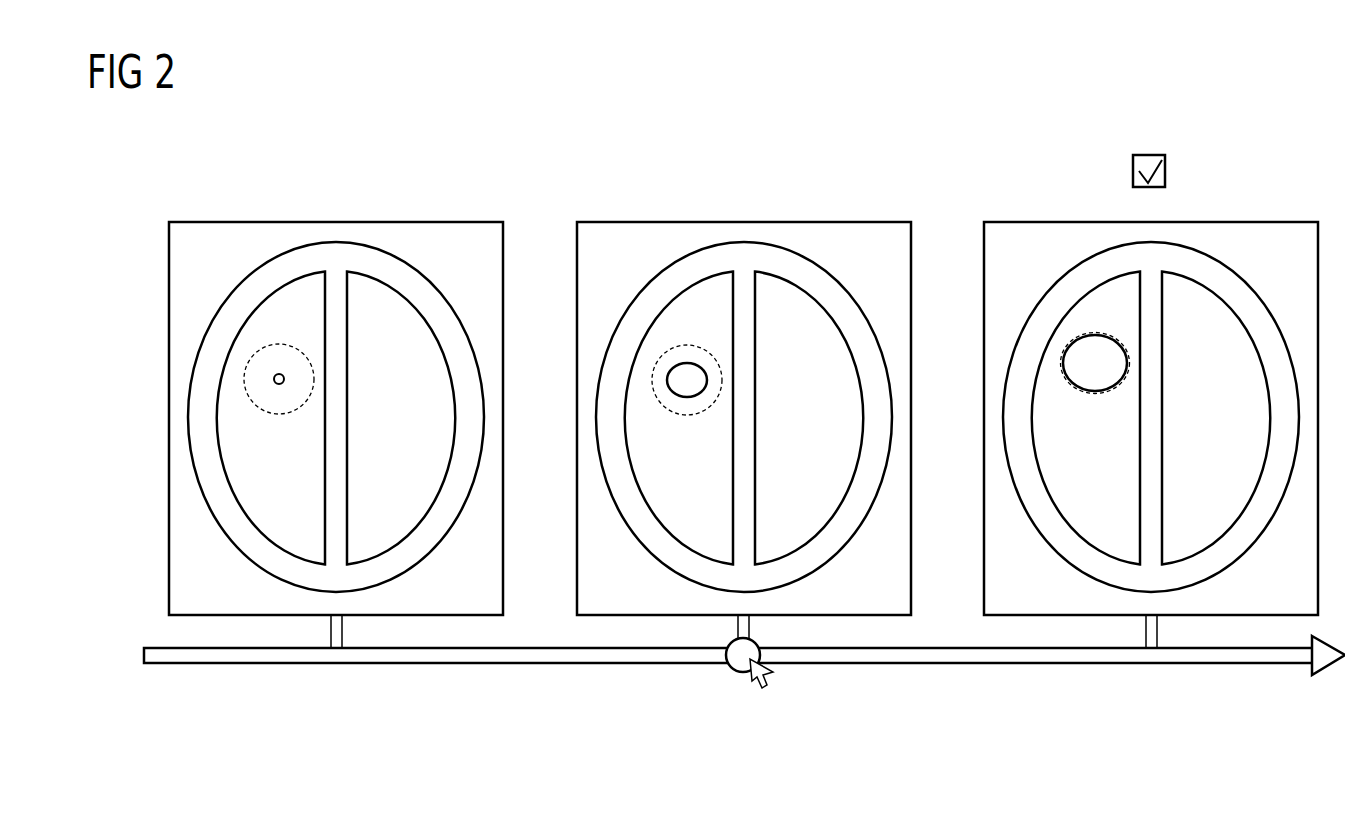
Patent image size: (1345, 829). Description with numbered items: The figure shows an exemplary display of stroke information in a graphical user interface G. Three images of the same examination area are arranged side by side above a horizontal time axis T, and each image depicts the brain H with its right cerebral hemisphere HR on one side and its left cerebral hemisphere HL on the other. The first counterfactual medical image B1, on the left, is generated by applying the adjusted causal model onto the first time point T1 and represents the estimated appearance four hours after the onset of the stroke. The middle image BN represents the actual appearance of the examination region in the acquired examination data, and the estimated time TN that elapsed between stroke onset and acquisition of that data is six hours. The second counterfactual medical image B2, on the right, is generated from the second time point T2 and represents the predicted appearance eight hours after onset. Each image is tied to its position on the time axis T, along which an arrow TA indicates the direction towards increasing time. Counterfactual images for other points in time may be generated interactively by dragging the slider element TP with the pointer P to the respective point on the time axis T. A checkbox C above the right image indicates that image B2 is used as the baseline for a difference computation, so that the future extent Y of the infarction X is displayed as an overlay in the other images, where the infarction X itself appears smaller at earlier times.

The graphical user interface G is at (597, 160).
The first counterfactual medical image B1 is at (190, 270).
The examination data image BN is at (598, 270).
The second counterfactual medical image B2 is at (1006, 270).
The brain H is at (336, 257).
The right cerebral hemisphere HR is at (303, 292).
The left cerebral hemisphere HL is at (390, 310).
The future extent of the infarction Y is at (244, 378).
The infarction X is at (279, 379).
The checkbox C is at (1150, 153).
The time axis T is at (543, 666).
The first time point T1 is at (337, 666).
The second time point T2 is at (1152, 666).
The estimated time TN is at (745, 673).
The slider element TP is at (724, 655).
The arrow TA is at (1318, 656).
The pointer P is at (768, 690).